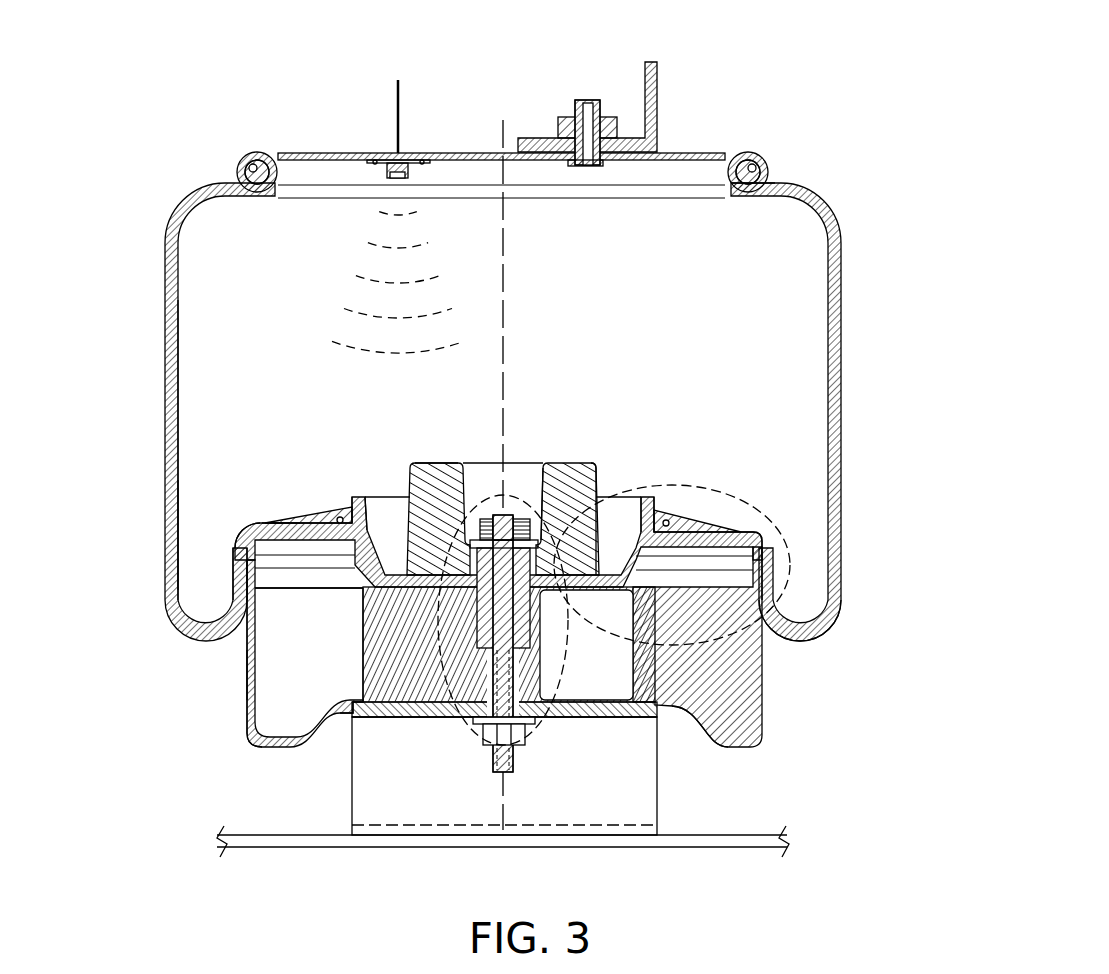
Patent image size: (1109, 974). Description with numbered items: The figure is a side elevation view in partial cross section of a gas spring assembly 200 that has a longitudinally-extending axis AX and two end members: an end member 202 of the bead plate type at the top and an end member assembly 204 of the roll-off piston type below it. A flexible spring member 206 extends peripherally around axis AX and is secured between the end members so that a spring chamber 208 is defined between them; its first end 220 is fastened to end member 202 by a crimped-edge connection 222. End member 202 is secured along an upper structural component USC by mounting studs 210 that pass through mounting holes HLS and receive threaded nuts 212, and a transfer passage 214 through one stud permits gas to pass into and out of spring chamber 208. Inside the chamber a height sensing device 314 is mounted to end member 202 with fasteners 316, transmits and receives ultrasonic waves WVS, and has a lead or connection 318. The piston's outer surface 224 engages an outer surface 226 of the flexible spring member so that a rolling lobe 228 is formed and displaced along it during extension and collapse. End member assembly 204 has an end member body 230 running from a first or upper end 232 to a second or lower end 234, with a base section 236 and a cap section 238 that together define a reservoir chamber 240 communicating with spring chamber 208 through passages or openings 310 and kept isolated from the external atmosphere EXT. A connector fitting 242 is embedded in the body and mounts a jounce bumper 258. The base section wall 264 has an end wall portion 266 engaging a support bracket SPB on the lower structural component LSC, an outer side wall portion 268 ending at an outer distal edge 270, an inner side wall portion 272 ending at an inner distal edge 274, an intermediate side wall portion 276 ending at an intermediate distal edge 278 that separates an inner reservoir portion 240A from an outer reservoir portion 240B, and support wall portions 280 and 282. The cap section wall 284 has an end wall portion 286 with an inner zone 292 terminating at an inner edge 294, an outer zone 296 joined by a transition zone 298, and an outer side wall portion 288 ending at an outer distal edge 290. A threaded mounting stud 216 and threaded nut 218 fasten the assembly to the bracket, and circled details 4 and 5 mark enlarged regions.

The gas spring assembly 200 is at (539, 412).
The end member 202 is at (541, 133).
The end member assembly 204 is at (494, 636).
The flexible spring member 206 is at (490, 425).
The spring chamber 208 is at (205, 455).
The mounting studs 210 is at (545, 420).
The threaded nuts 212 is at (559, 128).
The transfer passage 214 is at (587, 101).
The threaded mounting stud 216 is at (514, 746).
The threaded nut 218 is at (522, 730).
The first end 220 is at (742, 200).
The crimped-edge connection 222 is at (776, 166).
The outer surface 224 is at (250, 700).
The outer surface 226 is at (178, 503).
The rolling lobe 228 is at (803, 642).
The end member body 230 is at (245, 718).
The first or upper end 232 is at (228, 560).
The second or lower end 234 is at (244, 742).
The base section 236 is at (765, 677).
The cap section 238 is at (733, 530).
The reservoir chamber 240 is at (708, 560).
The inner reservoir portion 240A is at (269, 619).
The outer reservoir portion 240B is at (577, 684).
The connector fitting 242 is at (465, 535).
The jounce bumper 258 is at (450, 470).
The base section wall 264 is at (272, 753).
The end wall portion 266 is at (597, 718).
The outer side wall portion 268 is at (250, 668).
The outer distal edge 270 is at (247, 580).
The inner side wall portion 272 is at (530, 640).
The inner distal edge 274 is at (528, 600).
The intermediate side wall portion 276 is at (360, 670).
The intermediate distal edge 278 is at (353, 588).
The support wall portions 280 is at (730, 750).
The support wall portions 282 is at (373, 714).
The cap section wall 284 is at (293, 522).
The end wall portion 286 is at (332, 525).
The outer side wall portion 288 is at (760, 566).
The outer distal edge 290 is at (252, 523).
The inner zone 292 is at (577, 508).
The inner edge 294 is at (555, 540).
The outer zone 296 is at (282, 525).
The transition zone 298 is at (647, 530).
The passages or openings 310 is at (361, 520).
The height sensing device 314 is at (380, 174).
The fasteners 316 is at (389, 197).
The lead or connection 318 is at (402, 102).
The detail view 4 is at (522, 505).
The detail view 5 is at (668, 487).
The longitudinally-extending axis AX is at (505, 278).
The ultrasonic waves WVS is at (356, 290).
The mounting holes HLS is at (603, 160).
The upper structural component USC is at (655, 66).
The support bracket SPB is at (412, 705).
The external atmosphere EXT is at (822, 793).
The lower structural component LSC is at (757, 844).